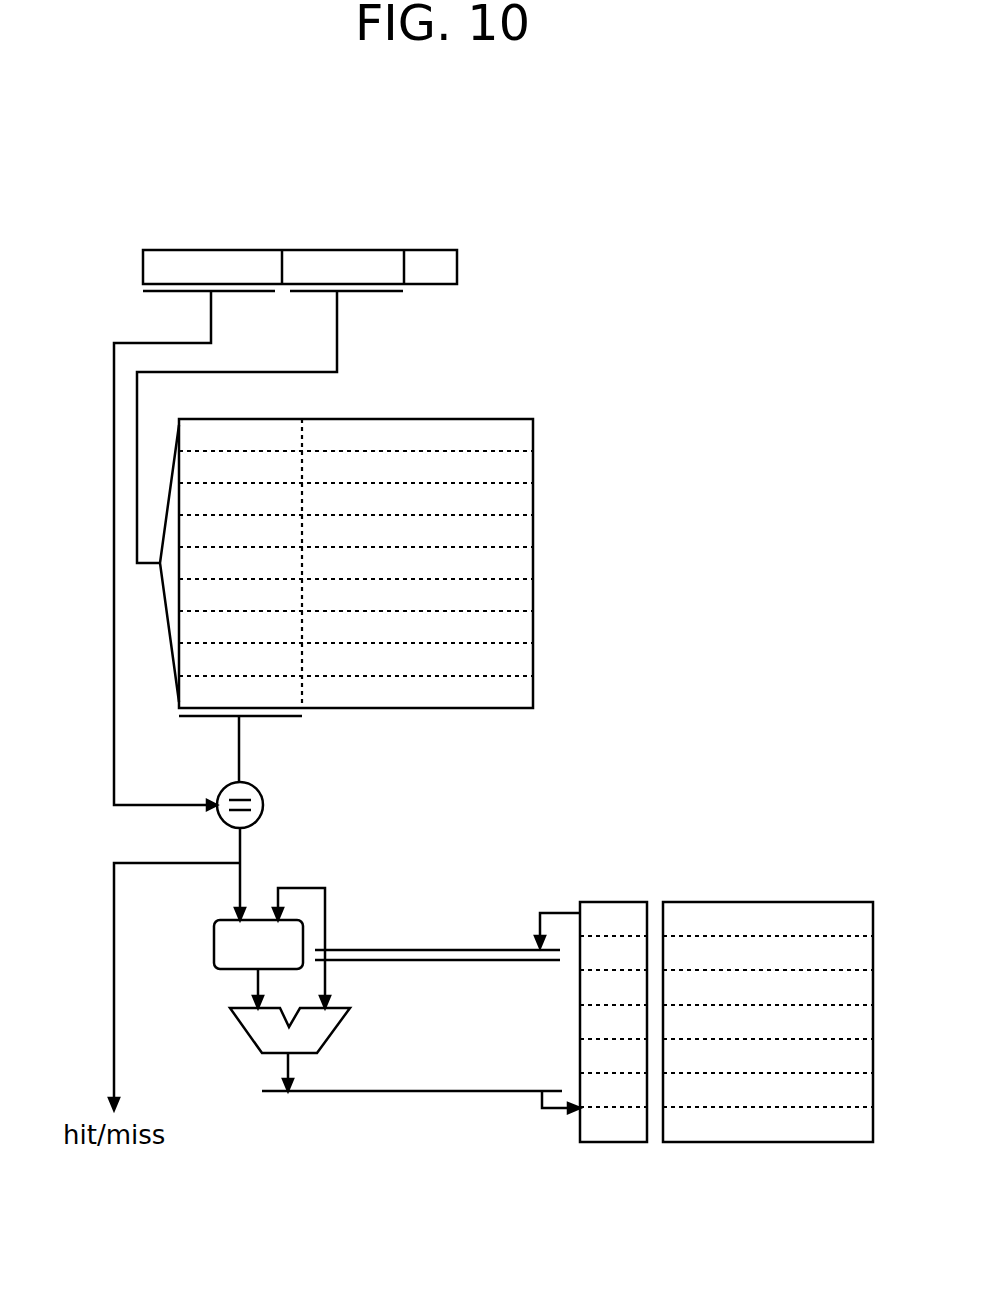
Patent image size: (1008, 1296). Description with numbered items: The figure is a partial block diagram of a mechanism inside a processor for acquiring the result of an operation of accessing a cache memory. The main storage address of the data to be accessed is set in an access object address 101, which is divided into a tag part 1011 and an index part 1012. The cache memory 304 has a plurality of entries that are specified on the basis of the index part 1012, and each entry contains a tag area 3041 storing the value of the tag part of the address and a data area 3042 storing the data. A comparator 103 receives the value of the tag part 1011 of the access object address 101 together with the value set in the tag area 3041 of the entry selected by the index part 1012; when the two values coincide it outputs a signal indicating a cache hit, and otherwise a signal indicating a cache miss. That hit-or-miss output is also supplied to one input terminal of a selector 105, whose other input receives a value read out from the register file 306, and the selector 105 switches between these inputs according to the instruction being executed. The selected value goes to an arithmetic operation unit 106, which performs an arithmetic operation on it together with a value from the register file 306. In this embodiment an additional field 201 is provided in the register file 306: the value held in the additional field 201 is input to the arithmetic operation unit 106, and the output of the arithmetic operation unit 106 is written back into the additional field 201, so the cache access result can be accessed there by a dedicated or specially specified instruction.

The access object address 101 is at (457, 267).
The tag part 1011 is at (213, 250).
The index part 1012 is at (347, 250).
The cache memory 304 is at (533, 436).
The tag area 3041 is at (243, 418).
The data area 3042 is at (400, 418).
The comparator 103 is at (263, 804).
The selector 105 is at (237, 970).
The arithmetic operation unit 106 is at (345, 1018).
The additional field 201 is at (615, 902).
The register file 306 is at (757, 902).